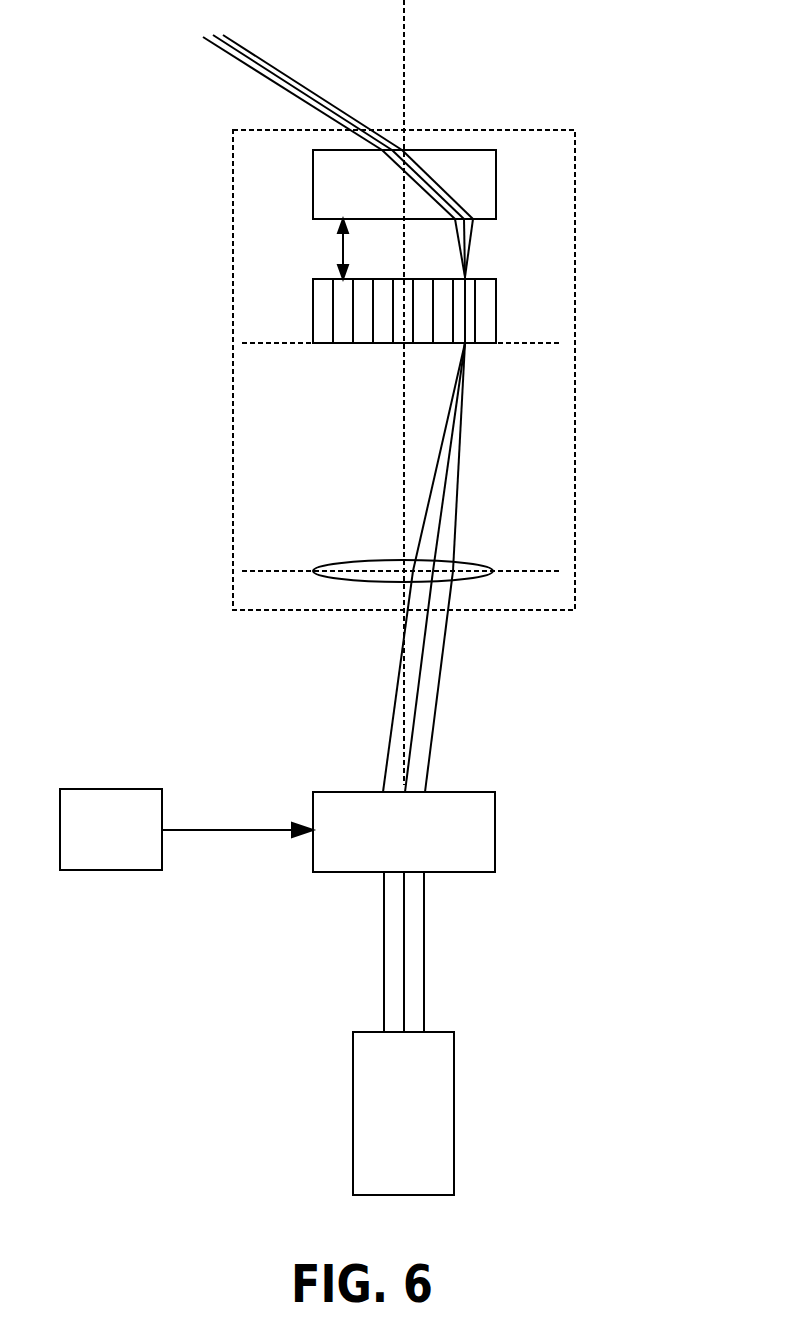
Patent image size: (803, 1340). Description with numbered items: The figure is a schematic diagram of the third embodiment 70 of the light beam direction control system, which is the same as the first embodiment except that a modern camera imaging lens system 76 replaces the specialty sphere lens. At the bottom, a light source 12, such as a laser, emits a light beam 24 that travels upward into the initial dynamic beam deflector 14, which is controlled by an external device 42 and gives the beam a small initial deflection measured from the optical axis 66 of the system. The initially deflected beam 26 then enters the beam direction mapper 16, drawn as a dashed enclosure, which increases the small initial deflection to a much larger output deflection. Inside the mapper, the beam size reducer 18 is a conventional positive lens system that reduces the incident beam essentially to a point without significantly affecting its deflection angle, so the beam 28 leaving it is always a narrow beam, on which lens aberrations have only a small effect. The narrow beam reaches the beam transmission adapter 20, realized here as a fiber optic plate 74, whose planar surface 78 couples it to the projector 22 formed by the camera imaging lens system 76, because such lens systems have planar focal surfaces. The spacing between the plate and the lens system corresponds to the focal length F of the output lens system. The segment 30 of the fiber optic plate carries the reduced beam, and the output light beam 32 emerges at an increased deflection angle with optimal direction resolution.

The third embodiment 70 is at (622, 136).
The optical axis 66 is at (405, 42).
The beam direction mapper 16 is at (232, 168).
The output light beam 32 is at (305, 92).
The projector 22 is at (306, 180).
The camera imaging lens system 76 is at (496, 180).
The focal length F is at (343, 252).
The beam transmission adapter 20 is at (305, 331).
The planar surface 78 is at (323, 278).
The fiber optic plate 74 is at (504, 299).
The segment of first optical element 30 is at (463, 328).
The incident beam 28 is at (446, 490).
The beam size reducer 18 is at (333, 562).
The initially deflected beam 26 is at (418, 682).
The initial dynamic beam deflector 14 is at (495, 838).
The external device 42 is at (60, 825).
The light beam 24 is at (404, 977).
The light source 12 is at (454, 1118).